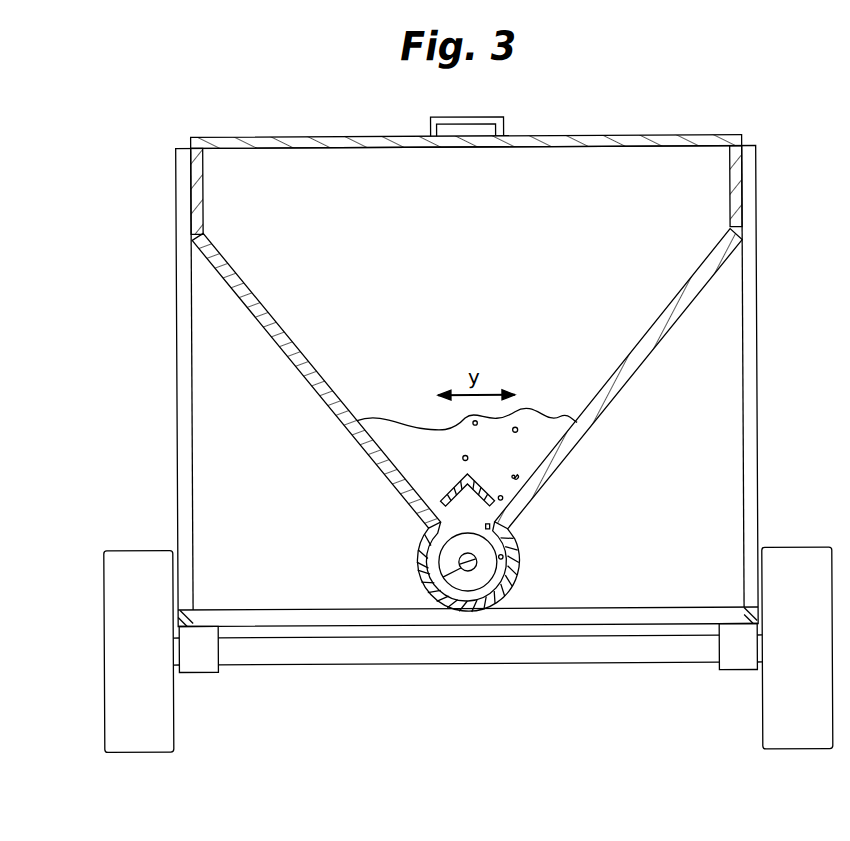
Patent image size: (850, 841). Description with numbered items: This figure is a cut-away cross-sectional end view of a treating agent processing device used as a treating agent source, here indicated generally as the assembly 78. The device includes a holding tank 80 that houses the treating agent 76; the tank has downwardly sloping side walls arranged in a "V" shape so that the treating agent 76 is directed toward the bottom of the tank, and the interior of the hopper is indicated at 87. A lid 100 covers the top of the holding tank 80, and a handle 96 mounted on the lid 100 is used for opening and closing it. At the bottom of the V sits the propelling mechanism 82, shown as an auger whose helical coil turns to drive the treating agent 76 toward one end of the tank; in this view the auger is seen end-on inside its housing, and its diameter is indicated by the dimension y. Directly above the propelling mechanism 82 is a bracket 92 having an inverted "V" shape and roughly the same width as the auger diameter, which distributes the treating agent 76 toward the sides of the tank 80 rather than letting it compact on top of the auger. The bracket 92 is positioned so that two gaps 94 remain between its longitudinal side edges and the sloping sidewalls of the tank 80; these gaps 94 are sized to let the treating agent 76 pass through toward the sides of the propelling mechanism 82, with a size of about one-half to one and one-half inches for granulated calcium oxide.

The hopper trailer assembly 78 is at (709, 85).
The hopper 87 is at (233, 158).
The lid 100 is at (715, 137).
The handle 96 is at (497, 117).
The holding tank 80 is at (235, 292).
The gaps 94 is at (432, 507).
The bracket 92 is at (506, 524).
The propelling mechanism 82 is at (448, 552).
The treating agent 76 is at (547, 437).